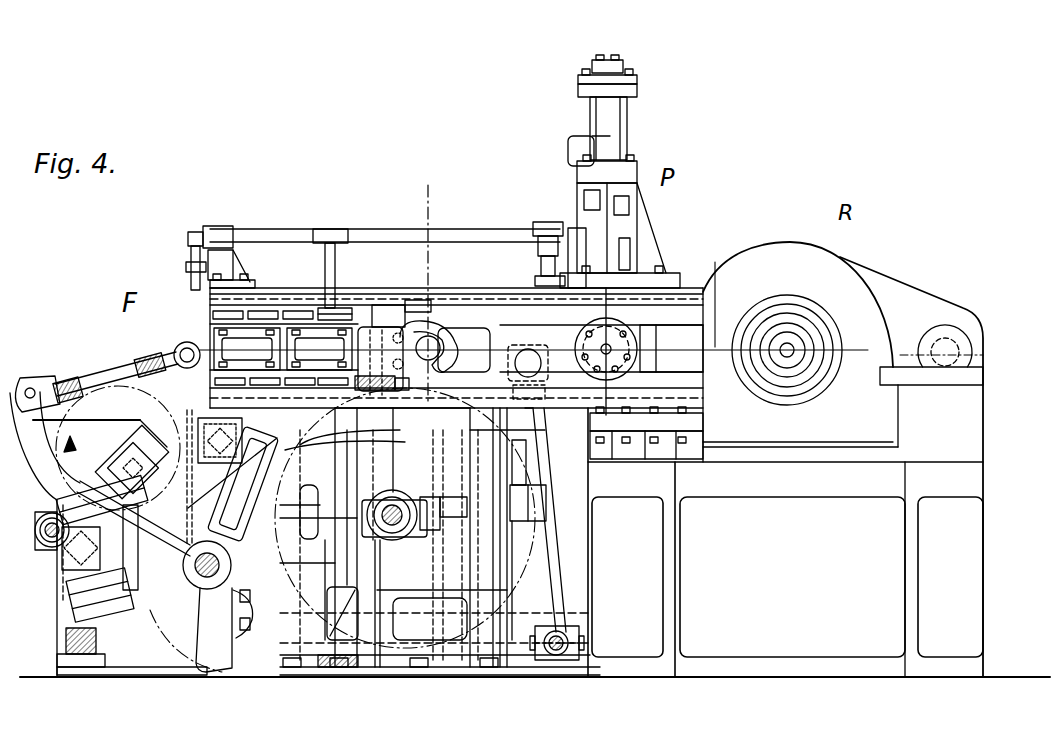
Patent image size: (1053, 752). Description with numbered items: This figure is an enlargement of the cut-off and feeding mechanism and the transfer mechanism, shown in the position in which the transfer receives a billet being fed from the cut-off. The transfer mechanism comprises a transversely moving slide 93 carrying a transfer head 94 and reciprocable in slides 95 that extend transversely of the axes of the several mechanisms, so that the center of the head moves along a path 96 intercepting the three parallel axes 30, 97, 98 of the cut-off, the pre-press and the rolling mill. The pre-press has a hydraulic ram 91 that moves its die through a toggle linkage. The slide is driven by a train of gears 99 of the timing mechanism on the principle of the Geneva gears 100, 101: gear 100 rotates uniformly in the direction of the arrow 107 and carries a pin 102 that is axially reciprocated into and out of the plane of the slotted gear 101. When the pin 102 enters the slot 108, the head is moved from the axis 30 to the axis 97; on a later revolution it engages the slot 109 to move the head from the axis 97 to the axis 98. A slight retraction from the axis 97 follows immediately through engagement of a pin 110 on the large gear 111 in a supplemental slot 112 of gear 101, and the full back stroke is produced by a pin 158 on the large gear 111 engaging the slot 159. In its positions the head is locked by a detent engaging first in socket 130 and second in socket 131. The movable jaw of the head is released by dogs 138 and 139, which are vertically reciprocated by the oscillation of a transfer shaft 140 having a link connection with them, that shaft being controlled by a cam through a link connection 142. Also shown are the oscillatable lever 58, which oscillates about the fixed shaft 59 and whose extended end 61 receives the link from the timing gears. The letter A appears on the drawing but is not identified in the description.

The axis of the cut-off and feeding mechanism 30 is at (452, 336).
The oscillatable lever 58 is at (548, 356).
The fixed shaft 59 is at (548, 504).
The extended end of the right hand lever 61 is at (553, 560).
The hydraulic ram 91 is at (620, 118).
The transversely moving slide 93 is at (352, 323).
The transfer head 94 is at (438, 342).
The slides 95 is at (276, 292).
The path 96 is at (715, 262).
The axis of the pre-press 97 is at (600, 348).
The axis of the rolling mill 98 is at (777, 342).
The train of gears 99 is at (72, 598).
The Geneva gear 100 is at (77, 432).
The slotted gear 101 is at (192, 612).
The pin 102 is at (40, 542).
The arrow 107 is at (78, 388).
The slot 108 is at (60, 560).
The slot 109 is at (76, 615).
The pin 110 is at (394, 490).
The large gear 111 is at (532, 580).
The supplemental slot 112 is at (296, 442).
The socket 130 is at (130, 405).
The socket 131 is at (56, 566).
The dog 138 is at (548, 262).
The dog 139 is at (335, 262).
The transfer shaft 140 is at (445, 240).
The link connection 142 is at (192, 290).
The pin 158 is at (369, 428).
The slot 159 is at (365, 442).
The pivot block A is at (582, 641).